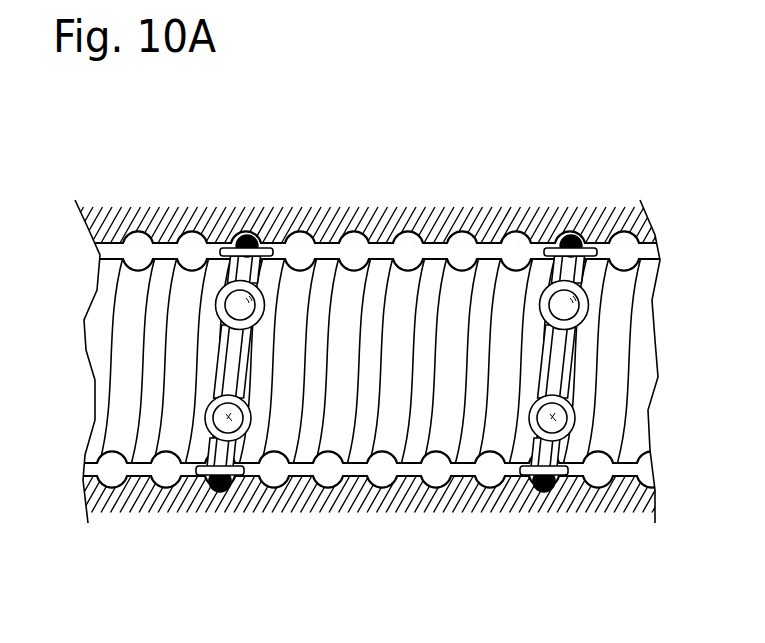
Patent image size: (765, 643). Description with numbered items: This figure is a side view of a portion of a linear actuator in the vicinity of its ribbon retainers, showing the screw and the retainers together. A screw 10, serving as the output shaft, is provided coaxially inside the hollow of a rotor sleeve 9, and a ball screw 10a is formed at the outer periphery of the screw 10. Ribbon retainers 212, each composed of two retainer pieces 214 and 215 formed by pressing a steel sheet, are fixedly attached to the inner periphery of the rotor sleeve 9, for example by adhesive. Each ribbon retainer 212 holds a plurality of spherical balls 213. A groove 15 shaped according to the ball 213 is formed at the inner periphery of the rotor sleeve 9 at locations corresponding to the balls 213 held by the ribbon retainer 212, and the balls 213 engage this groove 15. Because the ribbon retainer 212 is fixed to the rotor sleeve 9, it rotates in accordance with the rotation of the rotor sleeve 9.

The rotor sleeve 9 is at (393, 225).
The screw 10 is at (347, 322).
The ball screw 10a is at (412, 262).
The groove 15 is at (303, 245).
The ribbon retainer 212 is at (228, 365).
The ball 213 is at (234, 424).
The retainer piece 214 is at (283, 255).
The retainer piece 215 is at (218, 252).